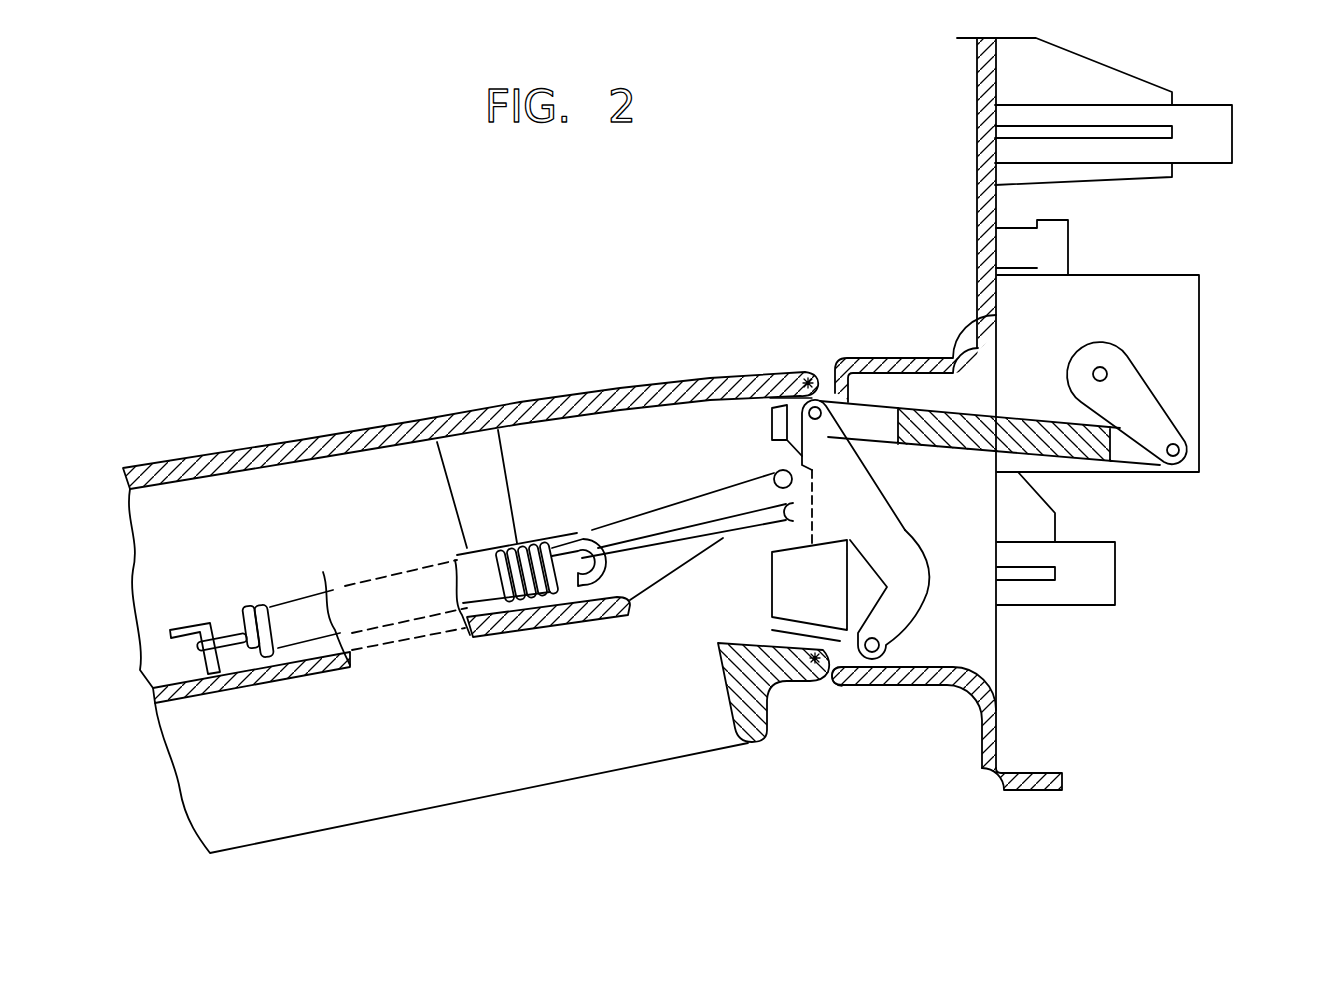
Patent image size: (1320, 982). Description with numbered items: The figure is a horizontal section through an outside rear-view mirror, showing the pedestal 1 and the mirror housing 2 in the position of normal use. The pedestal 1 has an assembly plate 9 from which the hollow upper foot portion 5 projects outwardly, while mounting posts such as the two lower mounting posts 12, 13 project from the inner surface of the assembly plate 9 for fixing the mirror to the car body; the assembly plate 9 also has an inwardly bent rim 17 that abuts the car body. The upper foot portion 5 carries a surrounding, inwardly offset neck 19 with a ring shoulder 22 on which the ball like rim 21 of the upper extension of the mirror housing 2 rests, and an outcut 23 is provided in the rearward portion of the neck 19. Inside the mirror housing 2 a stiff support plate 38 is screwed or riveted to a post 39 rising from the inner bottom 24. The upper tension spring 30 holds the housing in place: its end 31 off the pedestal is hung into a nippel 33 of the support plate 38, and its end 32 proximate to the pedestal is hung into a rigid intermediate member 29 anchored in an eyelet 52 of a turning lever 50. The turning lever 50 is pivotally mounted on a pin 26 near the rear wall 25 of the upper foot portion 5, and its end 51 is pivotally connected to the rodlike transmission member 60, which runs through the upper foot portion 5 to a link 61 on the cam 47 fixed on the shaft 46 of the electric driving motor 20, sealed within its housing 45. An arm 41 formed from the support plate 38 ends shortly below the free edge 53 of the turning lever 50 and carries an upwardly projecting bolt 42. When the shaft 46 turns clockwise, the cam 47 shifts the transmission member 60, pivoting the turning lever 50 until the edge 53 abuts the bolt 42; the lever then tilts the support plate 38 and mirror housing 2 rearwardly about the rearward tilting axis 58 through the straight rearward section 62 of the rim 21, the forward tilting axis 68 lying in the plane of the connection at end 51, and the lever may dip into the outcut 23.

The pedestal 1 is at (965, 93).
The mirror housing 2 is at (237, 446).
The upper foot portion 5 is at (896, 356).
The assembly plate 9 is at (977, 192).
The lower mounting post 12 is at (1074, 590).
The lower mounting post 13 is at (1222, 133).
The inwardly bent rim 17 is at (1022, 792).
The neck 19 is at (770, 427).
The electric driving motor 20 is at (1207, 302).
The ball like rim 21 is at (790, 378).
The ring shoulder 22 is at (833, 685).
The outcut 23 is at (790, 631).
The inner bottom 24 is at (526, 400).
The rear wall 25 is at (920, 690).
The pin 26 is at (880, 646).
The rigid intermediate member 29 is at (628, 548).
The upper tension spring 30 is at (255, 606).
The end off the pedestal 31 is at (228, 640).
The end proximate to the pedestal 32 is at (560, 546).
The nippel 33 is at (186, 626).
The support plate 38 is at (531, 630).
The post 39 is at (446, 497).
The arm 41 is at (648, 572).
The bolt 42 is at (758, 508).
The housing 45 is at (1200, 362).
The shaft 46 is at (1097, 368).
The cam 47 is at (1147, 393).
The turning lever 50 is at (908, 537).
The end of turning lever 51 is at (840, 458).
The eyelet 52 is at (805, 545).
The free edge 53 is at (770, 448).
The rearward tilting axis 58 is at (810, 672).
The transmission member 60 is at (963, 448).
The link 61 is at (1200, 457).
The straight rearward section 62 is at (789, 683).
The forward tilting axis 68 is at (810, 372).